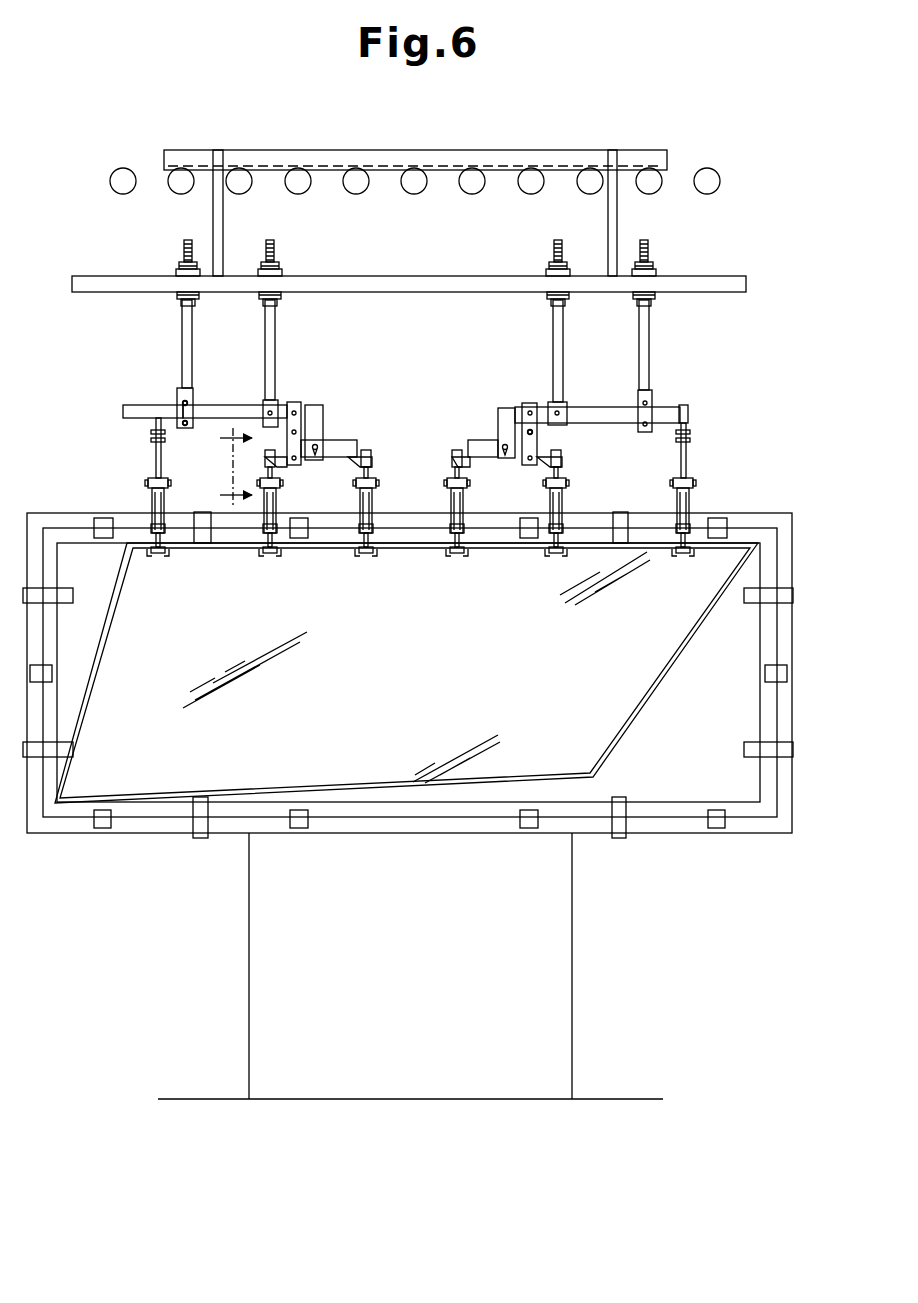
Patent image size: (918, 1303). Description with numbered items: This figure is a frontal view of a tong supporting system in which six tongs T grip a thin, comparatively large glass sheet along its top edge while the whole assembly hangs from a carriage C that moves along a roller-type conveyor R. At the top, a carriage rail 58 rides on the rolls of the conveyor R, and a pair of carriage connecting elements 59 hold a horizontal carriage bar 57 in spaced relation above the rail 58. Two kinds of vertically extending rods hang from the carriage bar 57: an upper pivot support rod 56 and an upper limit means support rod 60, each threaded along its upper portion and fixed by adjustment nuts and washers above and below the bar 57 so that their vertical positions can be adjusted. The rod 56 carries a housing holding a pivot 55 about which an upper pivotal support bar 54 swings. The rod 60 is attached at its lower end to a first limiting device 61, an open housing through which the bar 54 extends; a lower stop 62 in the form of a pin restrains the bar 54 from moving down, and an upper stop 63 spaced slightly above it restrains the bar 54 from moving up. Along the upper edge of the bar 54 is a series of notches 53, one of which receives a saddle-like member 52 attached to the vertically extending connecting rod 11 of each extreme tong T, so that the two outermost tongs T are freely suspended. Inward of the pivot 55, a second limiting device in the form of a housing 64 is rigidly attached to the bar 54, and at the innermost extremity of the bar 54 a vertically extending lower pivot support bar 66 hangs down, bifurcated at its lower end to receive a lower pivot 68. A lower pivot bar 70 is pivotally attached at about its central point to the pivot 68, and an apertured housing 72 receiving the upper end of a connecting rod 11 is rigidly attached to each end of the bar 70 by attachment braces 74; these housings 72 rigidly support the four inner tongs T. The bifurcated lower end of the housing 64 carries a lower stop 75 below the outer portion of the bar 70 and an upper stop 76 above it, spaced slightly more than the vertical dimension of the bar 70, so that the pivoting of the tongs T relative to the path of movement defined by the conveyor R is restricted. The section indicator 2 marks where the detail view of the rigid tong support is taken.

The carriage C is at (446, 147).
The roller-type conveyor R is at (722, 160).
The tongs T is at (569, 503).
The carriage rail 58 is at (309, 150).
The carriage connecting elements 59 is at (213, 213).
The horizontal carriage bar 57 is at (388, 276).
The upper limit means support rod 60 is at (182, 335).
The upper pivot support rod 56 is at (276, 336).
The notches 53 is at (135, 407).
The upper pivotal support bar 54 is at (245, 405).
The first limiting device 61 is at (178, 390).
The upper stop 63 is at (181, 404).
The lower stop 62 is at (185, 428).
The saddle-like member 52 is at (150, 429).
The pivot 55 is at (280, 405).
The second limiting device housing 64 is at (301, 406).
The lower pivot support bar 66 is at (324, 416).
The lower pivot 68 is at (315, 455).
The lower pivot bar 70 is at (340, 441).
The apertured housing 72 is at (373, 462).
The attachment braces 74 is at (278, 470).
The lower stop 75 is at (533, 464).
The upper stop 76 is at (540, 433).
The vertically extending connecting rod 11 is at (152, 460).
The section line 2- 2 is at (225, 467).